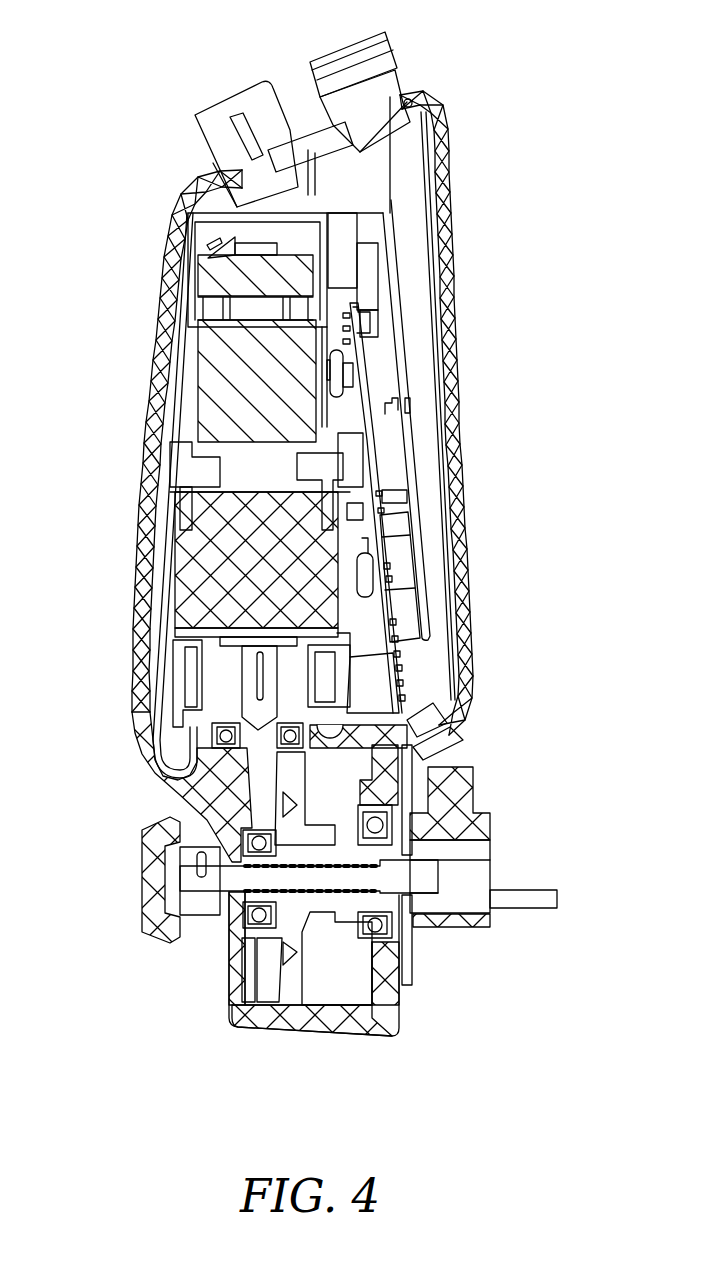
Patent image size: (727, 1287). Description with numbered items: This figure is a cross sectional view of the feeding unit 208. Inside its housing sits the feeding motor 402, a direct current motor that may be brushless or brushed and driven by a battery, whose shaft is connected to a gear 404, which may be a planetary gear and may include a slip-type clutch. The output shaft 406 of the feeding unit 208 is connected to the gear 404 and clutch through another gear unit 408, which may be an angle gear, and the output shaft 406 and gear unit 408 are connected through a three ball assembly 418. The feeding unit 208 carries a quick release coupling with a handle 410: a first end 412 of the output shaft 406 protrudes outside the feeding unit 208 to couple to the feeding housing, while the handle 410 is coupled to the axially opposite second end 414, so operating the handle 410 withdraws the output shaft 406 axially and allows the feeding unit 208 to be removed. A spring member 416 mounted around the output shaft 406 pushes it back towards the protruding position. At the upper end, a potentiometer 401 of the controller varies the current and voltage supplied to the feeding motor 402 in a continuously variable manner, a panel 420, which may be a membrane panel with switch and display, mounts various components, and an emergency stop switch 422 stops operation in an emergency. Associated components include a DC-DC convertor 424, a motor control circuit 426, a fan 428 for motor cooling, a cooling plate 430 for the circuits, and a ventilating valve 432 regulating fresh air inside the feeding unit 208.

The feeding unit 208 is at (440, 116).
The potentiometer 401 is at (237, 127).
The panel 420 is at (317, 117).
The emergency stop switch 422 is at (388, 36).
The fan 428 is at (337, 257).
The cooling plate 430 is at (398, 337).
The motor control circuit 426 is at (363, 393).
The DC-DC convertor 424 is at (407, 460).
The feeding motor 402 is at (197, 370).
The gear 404 is at (172, 566).
The gear unit 408 is at (275, 780).
The ventilating valve 432 is at (450, 728).
The three ball assembly 418 is at (367, 842).
The spring member 416 is at (380, 893).
The first end 412 is at (438, 893).
The handle 410 is at (143, 860).
The second end 414 is at (150, 903).
The output shaft 406 is at (233, 888).